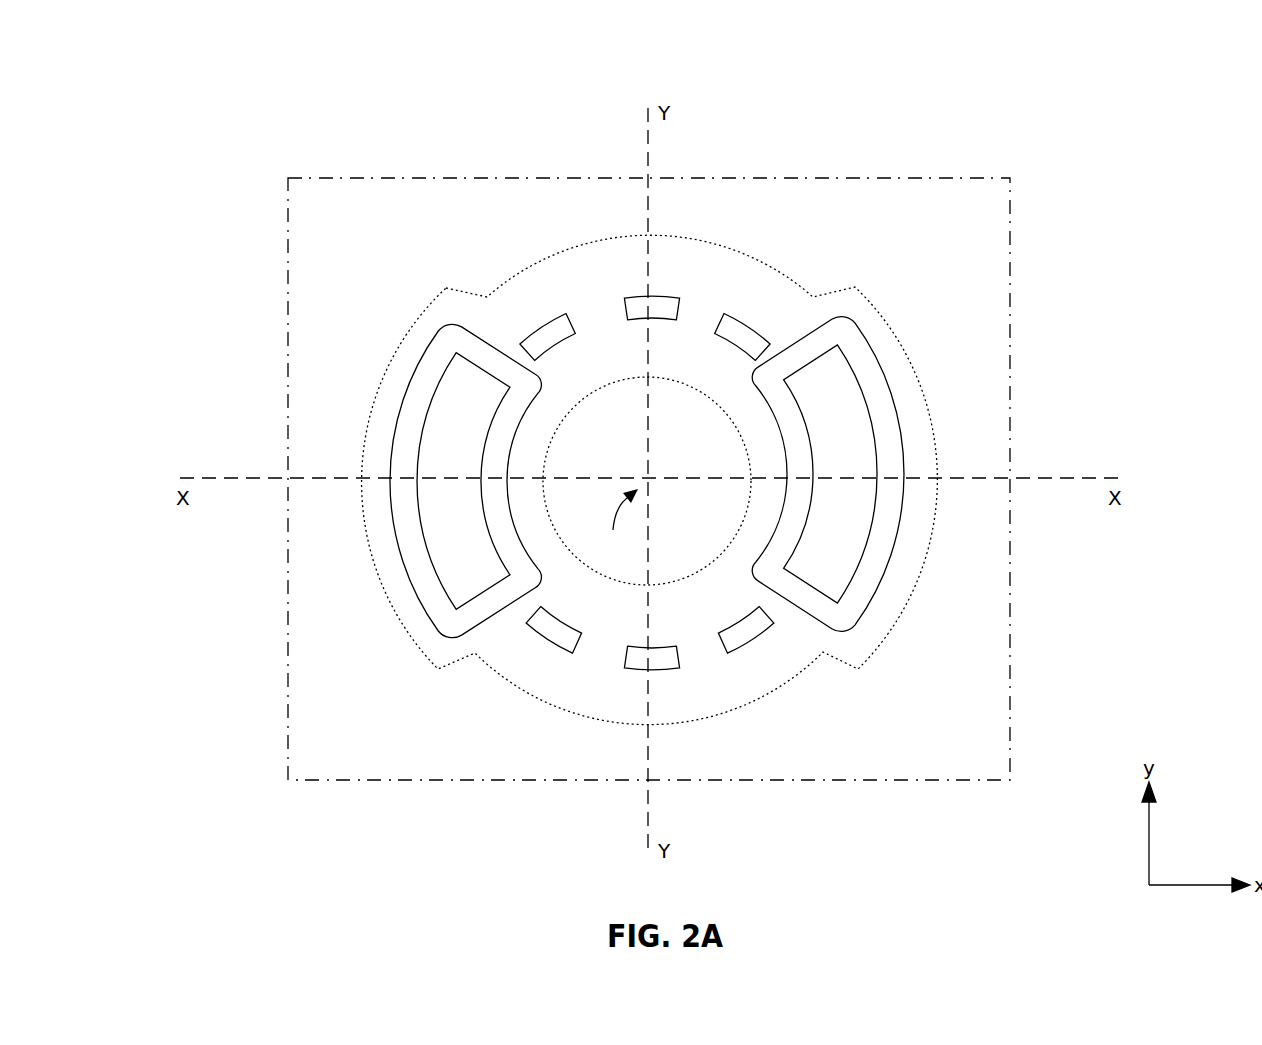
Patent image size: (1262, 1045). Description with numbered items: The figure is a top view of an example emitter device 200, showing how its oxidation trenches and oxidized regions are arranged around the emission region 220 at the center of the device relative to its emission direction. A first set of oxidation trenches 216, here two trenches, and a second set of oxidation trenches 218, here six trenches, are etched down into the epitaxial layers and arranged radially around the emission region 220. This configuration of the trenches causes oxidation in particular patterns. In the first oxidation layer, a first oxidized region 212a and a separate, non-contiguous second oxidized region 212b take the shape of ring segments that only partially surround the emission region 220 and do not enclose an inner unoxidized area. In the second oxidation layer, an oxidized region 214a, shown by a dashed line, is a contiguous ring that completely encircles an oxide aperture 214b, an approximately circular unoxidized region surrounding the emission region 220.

The emitter device 200 is at (184, 57).
The first oxidized region 212a is at (428, 373).
The second oxidized region 212b is at (862, 590).
The oxidized region 214a is at (562, 282).
The oxide aperture 214b is at (647, 481).
The first set of oxidation trenches 216 is at (847, 400).
The second set of oxidation trenches 218 is at (738, 332).
The emission region 220 is at (617, 523).